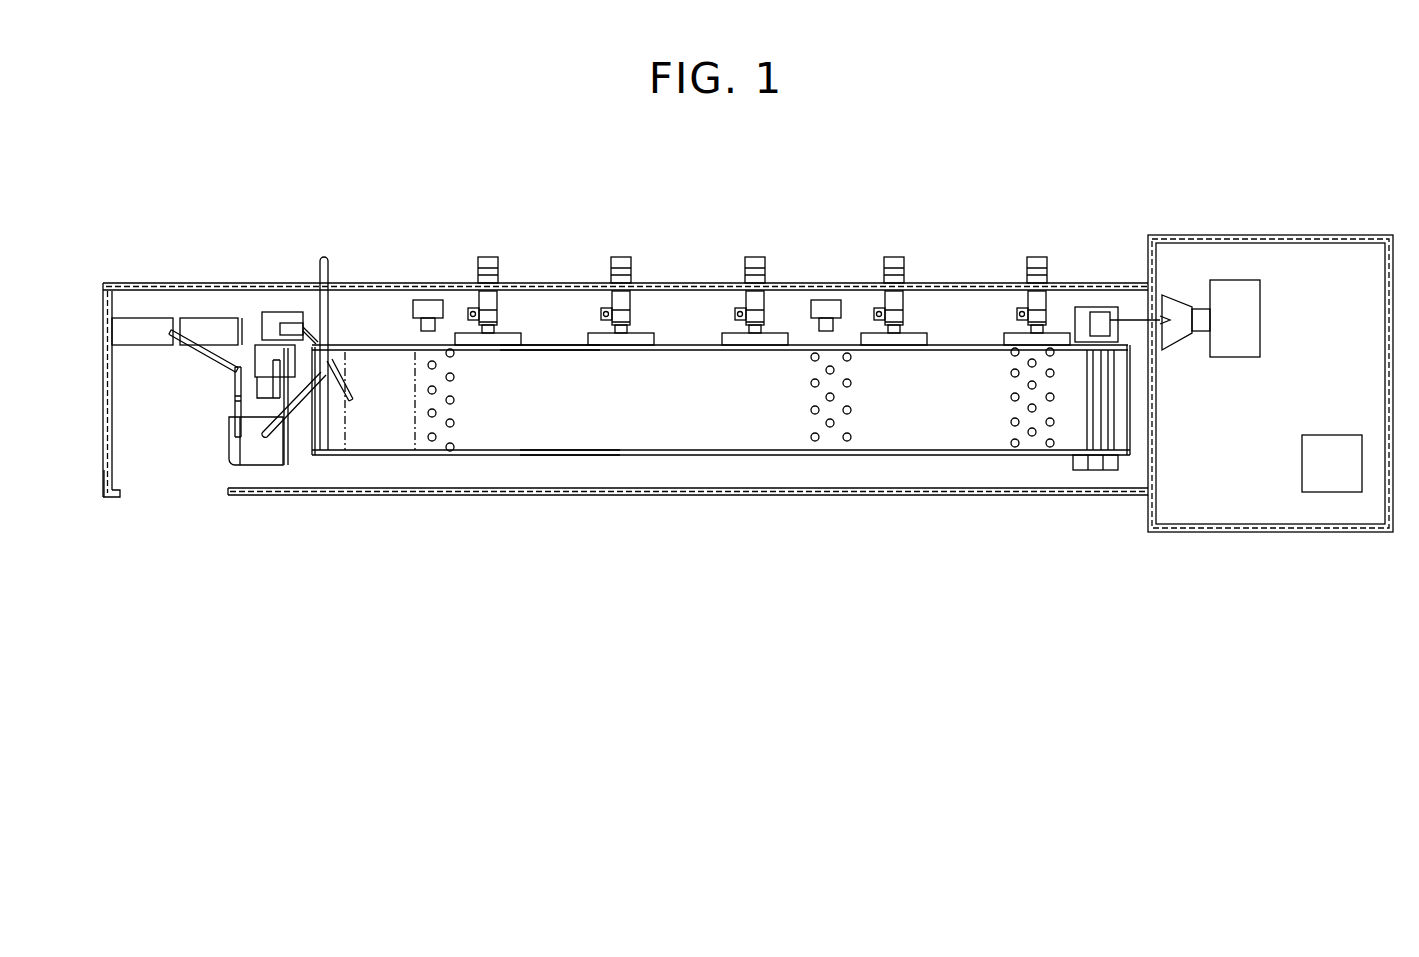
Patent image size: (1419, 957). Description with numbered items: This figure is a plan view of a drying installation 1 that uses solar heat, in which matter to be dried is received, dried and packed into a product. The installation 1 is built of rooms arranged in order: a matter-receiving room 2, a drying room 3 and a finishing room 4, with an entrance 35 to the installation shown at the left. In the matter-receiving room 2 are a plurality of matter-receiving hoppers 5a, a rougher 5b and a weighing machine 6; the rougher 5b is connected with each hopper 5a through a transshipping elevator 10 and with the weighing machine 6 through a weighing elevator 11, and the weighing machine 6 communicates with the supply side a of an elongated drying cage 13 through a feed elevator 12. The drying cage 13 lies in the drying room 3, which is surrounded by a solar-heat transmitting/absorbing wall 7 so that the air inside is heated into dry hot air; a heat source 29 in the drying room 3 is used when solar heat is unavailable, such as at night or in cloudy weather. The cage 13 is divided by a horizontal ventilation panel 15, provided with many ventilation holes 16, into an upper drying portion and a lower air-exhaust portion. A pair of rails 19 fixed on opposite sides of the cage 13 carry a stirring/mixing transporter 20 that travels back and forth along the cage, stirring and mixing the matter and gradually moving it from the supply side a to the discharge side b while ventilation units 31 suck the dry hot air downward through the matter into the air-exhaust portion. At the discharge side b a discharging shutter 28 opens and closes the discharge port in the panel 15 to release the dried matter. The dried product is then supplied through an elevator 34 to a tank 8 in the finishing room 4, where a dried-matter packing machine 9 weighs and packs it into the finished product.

The drying installation 1 is at (696, 266).
The matter-receiving room 2 is at (120, 437).
The drying room 3 is at (952, 312).
The finishing room 4 is at (1293, 258).
The matter-receiving hoppers 5a is at (139, 348).
The rougher 5b is at (258, 450).
The weighing machine 6 is at (265, 358).
The solar-heat transmitting/absorbing wall 7 is at (716, 496).
The tank 8 is at (1247, 313).
The dried-matter packing machine 9 is at (1302, 465).
The transshipping elevator 10 is at (233, 382).
The weighing elevator 11 is at (240, 395).
The feed elevator 12 is at (287, 322).
The elongated drying cage 13 is at (569, 458).
The horizontal ventilation panel 15 is at (637, 428).
The ventilation holes 16 is at (818, 440).
The rails 19 is at (552, 344).
The stirring/mixing transporter 20 is at (378, 432).
The discharging shutter 28 is at (1100, 400).
The heat source 29 is at (430, 300).
The ventilation unit 31 is at (488, 257).
The elevator 34 is at (1100, 312).
The entrance 35 is at (152, 488).
The supply side a is at (339, 360).
The discharge side b is at (1074, 428).